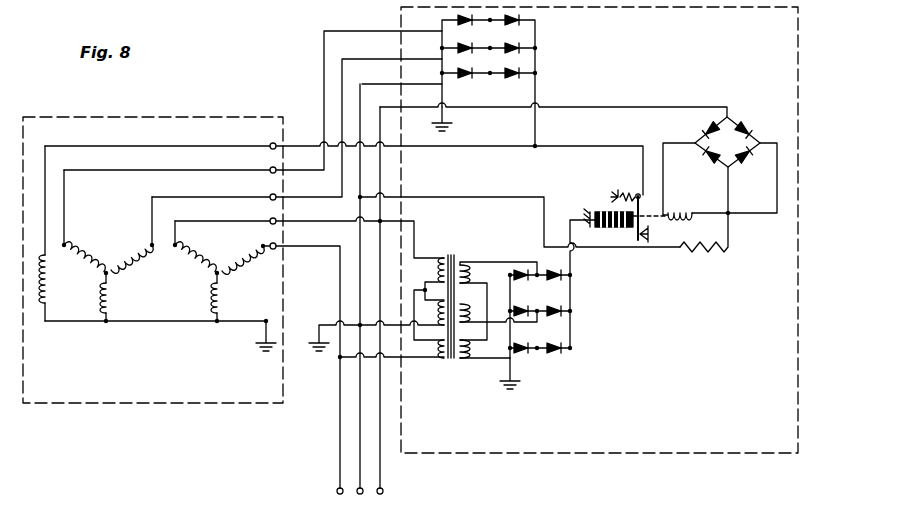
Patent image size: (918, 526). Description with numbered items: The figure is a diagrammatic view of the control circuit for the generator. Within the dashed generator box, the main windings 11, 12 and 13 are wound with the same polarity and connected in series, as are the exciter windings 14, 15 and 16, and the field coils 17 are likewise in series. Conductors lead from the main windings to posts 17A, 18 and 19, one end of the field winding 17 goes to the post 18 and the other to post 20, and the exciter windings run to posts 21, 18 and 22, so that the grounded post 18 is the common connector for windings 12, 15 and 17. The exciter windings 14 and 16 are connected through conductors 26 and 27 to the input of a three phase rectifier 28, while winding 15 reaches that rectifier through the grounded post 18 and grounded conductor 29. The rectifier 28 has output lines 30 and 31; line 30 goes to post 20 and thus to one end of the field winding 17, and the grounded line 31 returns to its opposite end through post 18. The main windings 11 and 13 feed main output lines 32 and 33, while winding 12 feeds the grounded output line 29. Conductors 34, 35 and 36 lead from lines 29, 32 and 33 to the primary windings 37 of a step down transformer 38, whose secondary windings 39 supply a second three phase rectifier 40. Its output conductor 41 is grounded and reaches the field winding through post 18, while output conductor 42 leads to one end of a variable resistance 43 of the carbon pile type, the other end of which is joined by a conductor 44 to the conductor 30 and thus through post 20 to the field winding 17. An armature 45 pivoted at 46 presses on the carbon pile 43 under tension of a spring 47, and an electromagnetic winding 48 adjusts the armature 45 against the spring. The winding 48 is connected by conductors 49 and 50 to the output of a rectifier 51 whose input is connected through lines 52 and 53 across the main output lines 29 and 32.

The main winding 11 is at (192, 264).
The main winding 12 is at (211, 300).
The main winding 13 is at (244, 263).
The exciter winding 14 is at (90, 256).
The exciter winding 15 is at (112, 300).
The exciter winding 16 is at (133, 266).
The field coil 17 is at (52, 283).
The post 17A is at (271, 218).
The post 18 is at (266, 318).
The post 19 is at (271, 243).
The post 20 is at (271, 143).
The post 21 is at (271, 167).
The post 22 is at (271, 194).
The conductor 26 is at (323, 168).
The conductor 27 is at (341, 195).
The three phase rectifier 28 is at (498, 79).
The grounded conductor 29 is at (358, 249).
The output line 30 is at (480, 148).
The output line 31 is at (440, 104).
The main output line 32 is at (340, 219).
The main output line 33 is at (310, 248).
The conductor 34 is at (331, 323).
The conductor 35 is at (416, 234).
The conductor 36 is at (414, 360).
The primary windings 37 is at (437, 314).
The step down transformer 38 is at (454, 369).
The secondary windings 39 is at (468, 361).
The three phase rectifier 40 is at (561, 357).
The output conductor 41 is at (515, 372).
The output conductor 42 is at (584, 271).
The variable resistance 43 is at (600, 212).
The conductor 44 is at (607, 146).
The armature 45 is at (644, 214).
The pivot 46 is at (637, 242).
The spring 47 is at (627, 196).
The electromagnetic winding 48 is at (676, 212).
The conductor 49 is at (664, 172).
The conductor 50 is at (772, 180).
The rectifier 51 is at (752, 125).
The line 52 is at (620, 107).
The line 53 is at (622, 248).